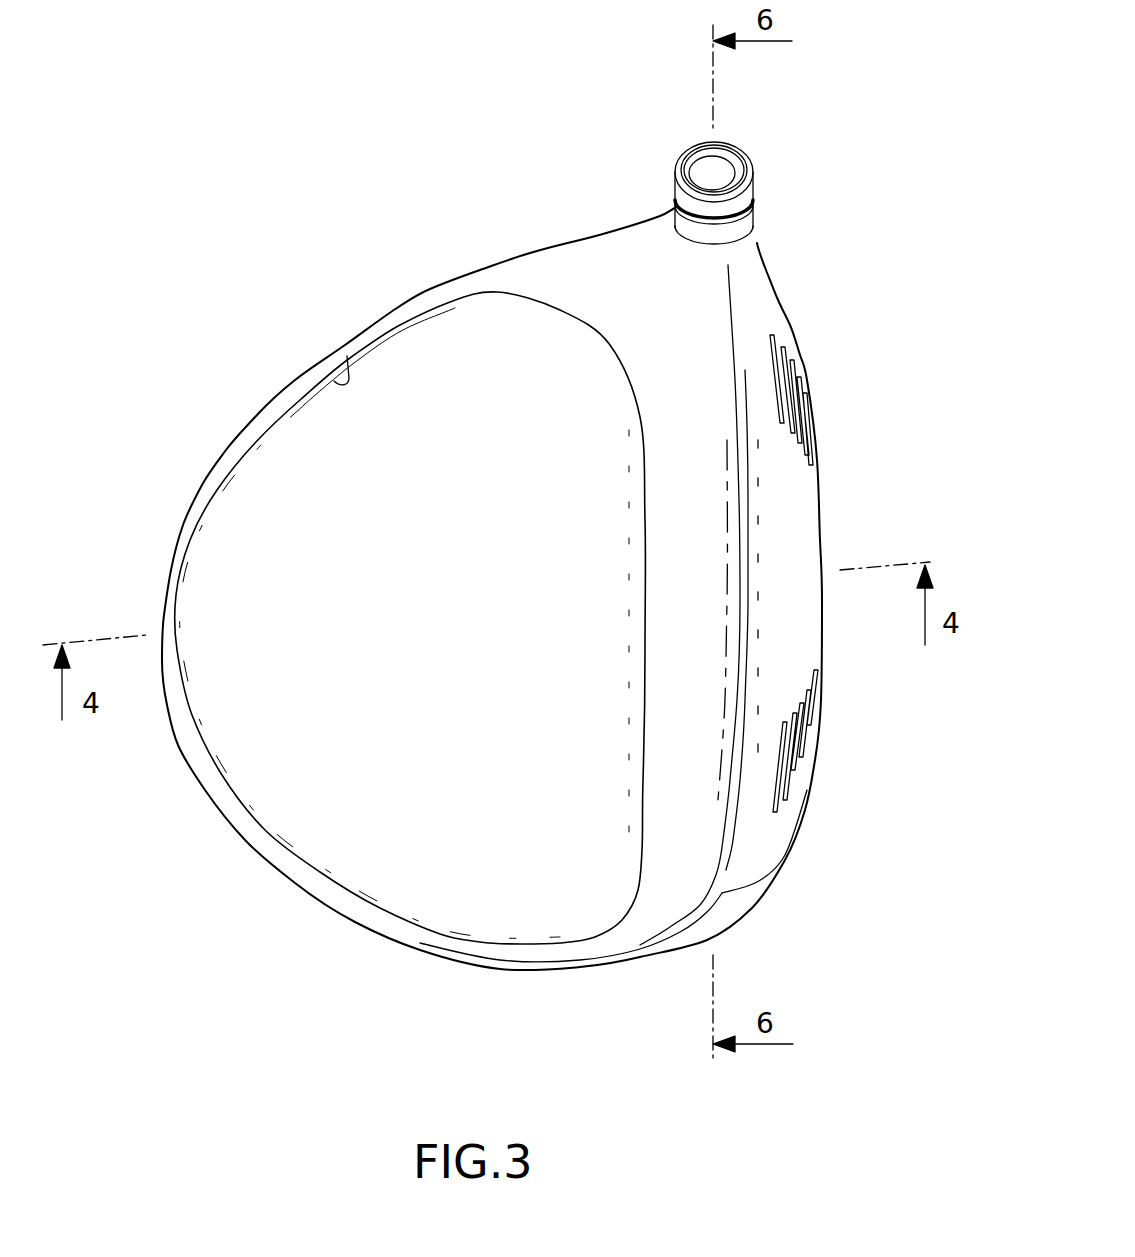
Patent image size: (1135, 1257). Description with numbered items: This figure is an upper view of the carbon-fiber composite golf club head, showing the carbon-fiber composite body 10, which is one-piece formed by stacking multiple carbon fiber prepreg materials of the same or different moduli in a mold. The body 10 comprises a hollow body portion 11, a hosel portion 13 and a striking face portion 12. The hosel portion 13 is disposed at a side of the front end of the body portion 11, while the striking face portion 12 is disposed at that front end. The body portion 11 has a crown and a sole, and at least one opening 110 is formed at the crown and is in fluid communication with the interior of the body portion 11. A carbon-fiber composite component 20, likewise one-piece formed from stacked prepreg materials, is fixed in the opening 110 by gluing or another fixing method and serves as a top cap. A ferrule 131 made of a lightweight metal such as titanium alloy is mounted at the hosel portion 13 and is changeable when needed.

The carbon-fiber composite body 10 is at (523, 243).
The hollow body portion 11 is at (648, 905).
The opening 110 is at (338, 380).
The striking face portion 12 is at (791, 532).
The hosel portion 13 is at (742, 243).
The ferrule 131 is at (755, 175).
The carbon-fiber composite component 20 is at (222, 588).